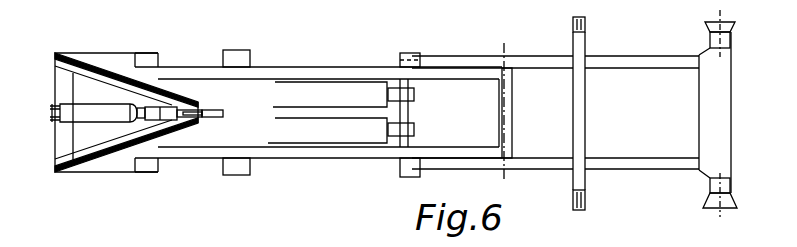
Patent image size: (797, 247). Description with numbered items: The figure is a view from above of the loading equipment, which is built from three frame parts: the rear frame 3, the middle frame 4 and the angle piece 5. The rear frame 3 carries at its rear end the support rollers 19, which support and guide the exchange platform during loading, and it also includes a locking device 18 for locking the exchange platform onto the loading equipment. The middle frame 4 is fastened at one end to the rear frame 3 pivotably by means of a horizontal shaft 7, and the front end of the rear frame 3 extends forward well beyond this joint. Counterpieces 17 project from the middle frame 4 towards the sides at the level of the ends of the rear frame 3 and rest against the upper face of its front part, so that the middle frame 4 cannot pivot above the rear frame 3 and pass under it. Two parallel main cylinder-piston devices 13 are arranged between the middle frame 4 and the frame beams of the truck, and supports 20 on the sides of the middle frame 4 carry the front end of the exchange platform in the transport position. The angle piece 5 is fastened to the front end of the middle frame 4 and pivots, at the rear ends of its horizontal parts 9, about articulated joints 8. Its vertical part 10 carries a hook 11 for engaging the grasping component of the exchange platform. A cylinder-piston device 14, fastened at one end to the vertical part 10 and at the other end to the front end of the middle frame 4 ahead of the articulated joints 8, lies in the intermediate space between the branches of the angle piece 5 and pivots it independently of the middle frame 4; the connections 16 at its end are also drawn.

The rear frame 3 is at (643, 165).
The middle frame 4 is at (322, 148).
The angle piece 5 is at (106, 176).
The horizontal shaft 7 is at (504, 110).
The articulated joints 8 is at (144, 53).
The horizontal parts 9 is at (134, 60).
The vertical part 10 is at (167, 95).
The hook 11 is at (213, 118).
The main cylinder-piston devices 13 is at (353, 128).
The cylinder-piston device 14 is at (90, 120).
The hose connection 16 is at (53, 106).
The counterpieces 17 is at (417, 67).
The locking device 18 is at (572, 186).
The support rollers 19 is at (730, 25).
The supports 20 is at (242, 63).